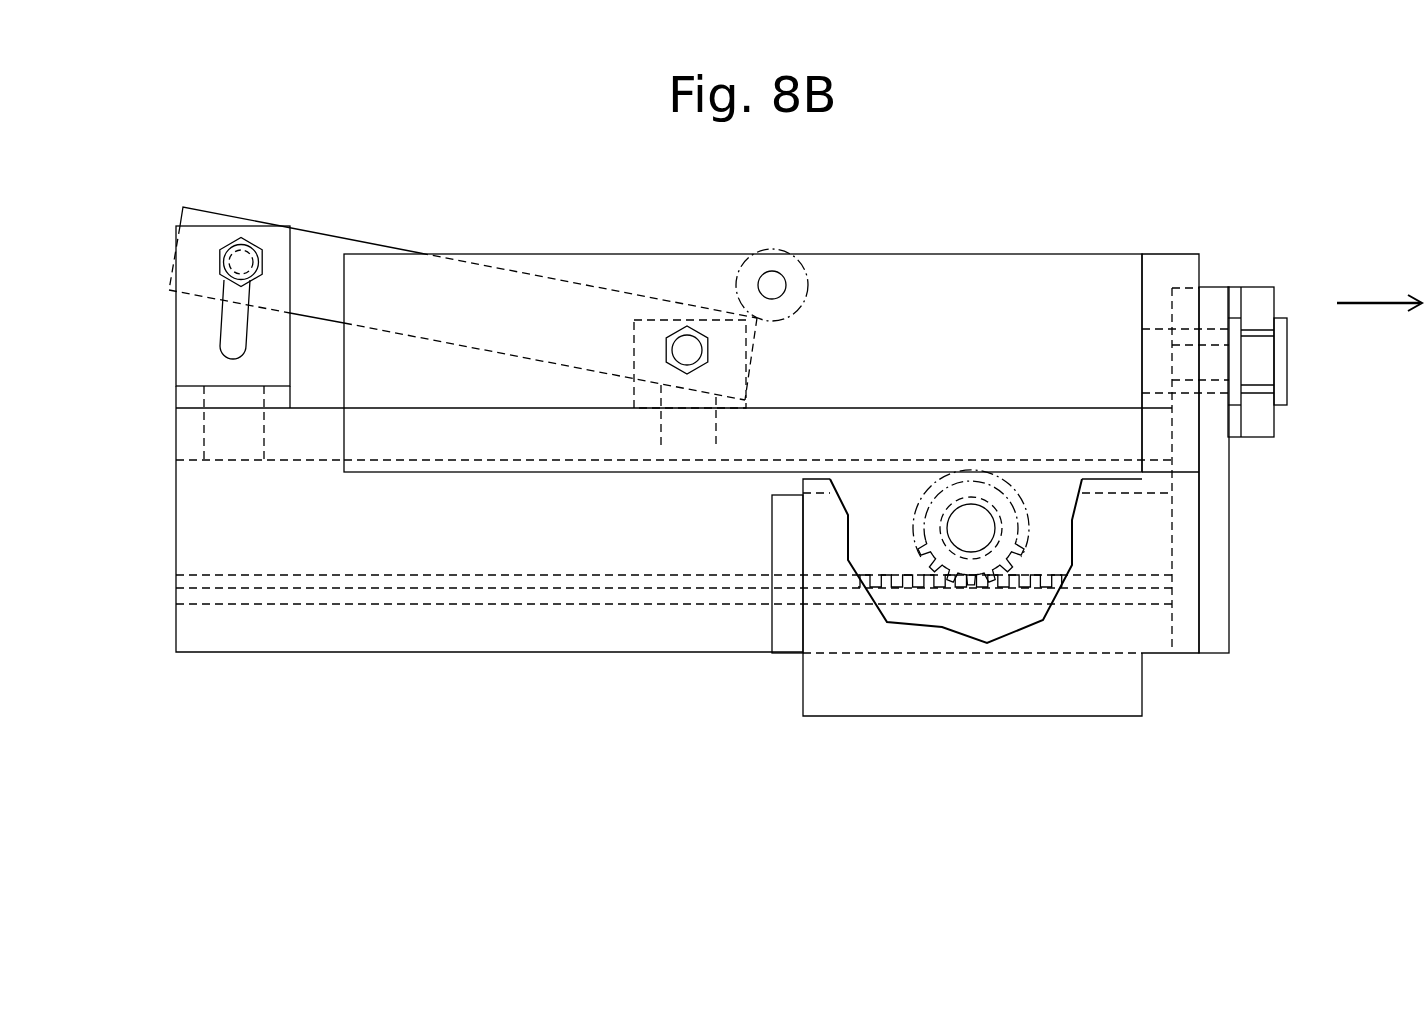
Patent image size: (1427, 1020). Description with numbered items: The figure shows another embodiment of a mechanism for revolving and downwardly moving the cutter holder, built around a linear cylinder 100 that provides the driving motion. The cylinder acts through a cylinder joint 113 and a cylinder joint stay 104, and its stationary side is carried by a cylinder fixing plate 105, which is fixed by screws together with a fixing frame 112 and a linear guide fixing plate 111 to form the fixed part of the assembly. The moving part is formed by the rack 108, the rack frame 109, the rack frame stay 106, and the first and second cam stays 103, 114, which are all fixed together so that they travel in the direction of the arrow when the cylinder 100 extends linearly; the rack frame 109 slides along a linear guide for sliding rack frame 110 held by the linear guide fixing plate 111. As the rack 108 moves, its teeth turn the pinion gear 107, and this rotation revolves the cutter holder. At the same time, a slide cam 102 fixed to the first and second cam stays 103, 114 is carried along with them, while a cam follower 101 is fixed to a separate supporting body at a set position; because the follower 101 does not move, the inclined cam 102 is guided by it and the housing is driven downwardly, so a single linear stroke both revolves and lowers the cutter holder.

The linear cylinder 100 is at (977, 287).
The cam follower 101 is at (808, 278).
The slide cam 102 is at (333, 235).
The first cam stay 103 is at (202, 338).
The cylinder joint stay 104 is at (1252, 287).
The cylinder fixing plate 105 is at (1182, 632).
The rack frame stay 106 is at (1215, 518).
The pinion gear 107 is at (920, 550).
The rack 108 is at (980, 623).
The rack frame 109 is at (442, 543).
The linear guide for sliding rack frame 110 is at (787, 635).
The linear guide fixing plate 111 is at (868, 632).
The fixing frame 112 is at (1130, 697).
The cylinder joint 113 is at (1280, 348).
The second cam stay 114 is at (727, 330).